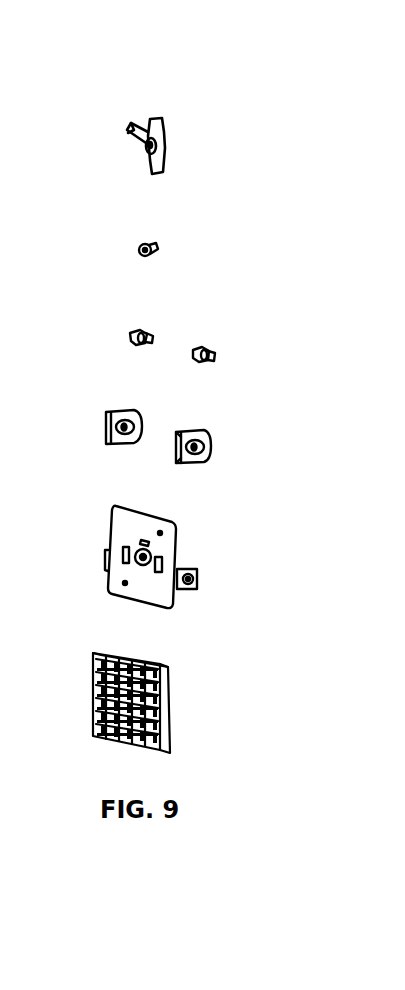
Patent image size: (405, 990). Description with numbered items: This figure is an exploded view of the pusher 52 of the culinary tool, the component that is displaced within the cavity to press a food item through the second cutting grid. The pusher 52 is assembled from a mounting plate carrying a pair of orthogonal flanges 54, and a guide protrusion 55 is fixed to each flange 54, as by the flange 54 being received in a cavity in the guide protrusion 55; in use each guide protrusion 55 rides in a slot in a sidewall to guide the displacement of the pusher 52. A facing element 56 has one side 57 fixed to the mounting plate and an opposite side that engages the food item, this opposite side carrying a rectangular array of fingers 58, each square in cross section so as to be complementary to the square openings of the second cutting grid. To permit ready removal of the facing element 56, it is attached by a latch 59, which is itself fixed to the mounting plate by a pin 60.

The pusher 52 is at (112, 406).
The flange 54 is at (195, 589).
The guide protrusion 55 is at (142, 412).
The facing element 56 is at (148, 711).
The side of facing element 57 is at (145, 703).
The fingers 58 is at (93, 692).
The latch 59 is at (167, 138).
The pin 60 is at (145, 258).